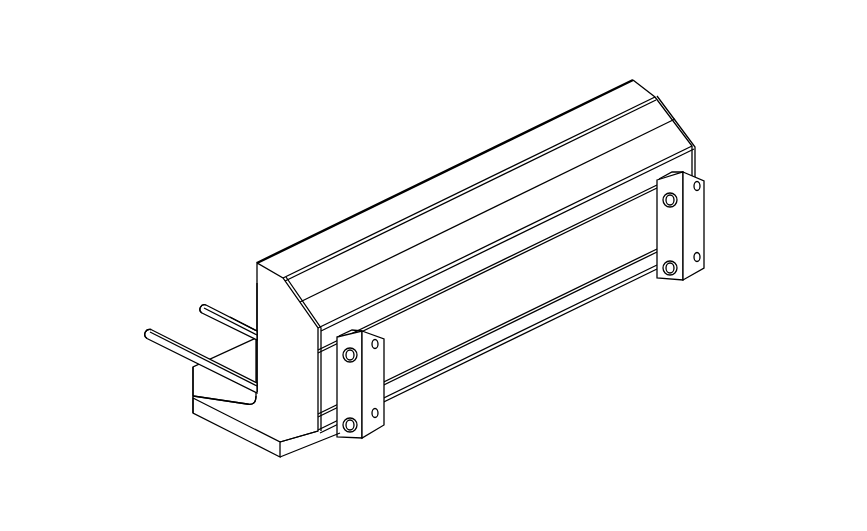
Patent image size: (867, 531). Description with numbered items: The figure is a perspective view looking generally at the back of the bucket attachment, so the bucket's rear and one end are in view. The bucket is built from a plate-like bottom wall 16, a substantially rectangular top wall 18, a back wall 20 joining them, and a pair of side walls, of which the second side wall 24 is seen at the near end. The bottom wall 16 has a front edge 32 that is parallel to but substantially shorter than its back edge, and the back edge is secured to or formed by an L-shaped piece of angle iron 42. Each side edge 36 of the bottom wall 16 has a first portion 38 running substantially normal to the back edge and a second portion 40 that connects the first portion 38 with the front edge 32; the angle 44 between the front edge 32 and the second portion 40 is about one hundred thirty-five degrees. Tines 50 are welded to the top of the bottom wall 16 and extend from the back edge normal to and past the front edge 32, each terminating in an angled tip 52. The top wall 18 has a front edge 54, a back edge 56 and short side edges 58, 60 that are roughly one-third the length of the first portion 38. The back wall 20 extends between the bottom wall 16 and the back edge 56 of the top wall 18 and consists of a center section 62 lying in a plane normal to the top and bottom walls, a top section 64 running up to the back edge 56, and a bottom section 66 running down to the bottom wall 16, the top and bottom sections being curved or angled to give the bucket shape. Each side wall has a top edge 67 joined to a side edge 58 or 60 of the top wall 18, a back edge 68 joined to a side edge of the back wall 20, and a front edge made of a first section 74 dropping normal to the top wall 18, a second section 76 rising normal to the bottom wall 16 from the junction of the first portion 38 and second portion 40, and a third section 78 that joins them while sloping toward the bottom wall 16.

The bottom wall 16 is at (233, 355).
The top wall 18 is at (400, 206).
The back wall 20 is at (480, 317).
The second side wall 24 is at (289, 352).
The front edge 32 is at (245, 348).
The side edge 36 is at (183, 405).
The first portion 38 is at (195, 415).
The second portion 40 is at (193, 372).
The L-shaped piece of angle iron 42 is at (293, 453).
The angle 44 is at (193, 412).
The tines 50 is at (257, 283).
The angled tip 52 is at (205, 307).
The front edge 54 is at (447, 169).
The back edge 56 is at (532, 147).
The side edge 58 is at (647, 85).
The side edge 60 is at (277, 272).
The center section 62 is at (553, 275).
The top section 64 is at (623, 133).
The bottom section 66 is at (523, 330).
The top edge 67 is at (262, 270).
The back edge 68 is at (340, 434).
The first section 74 is at (230, 317).
The second section 76 is at (197, 390).
The third section 78 is at (233, 403).